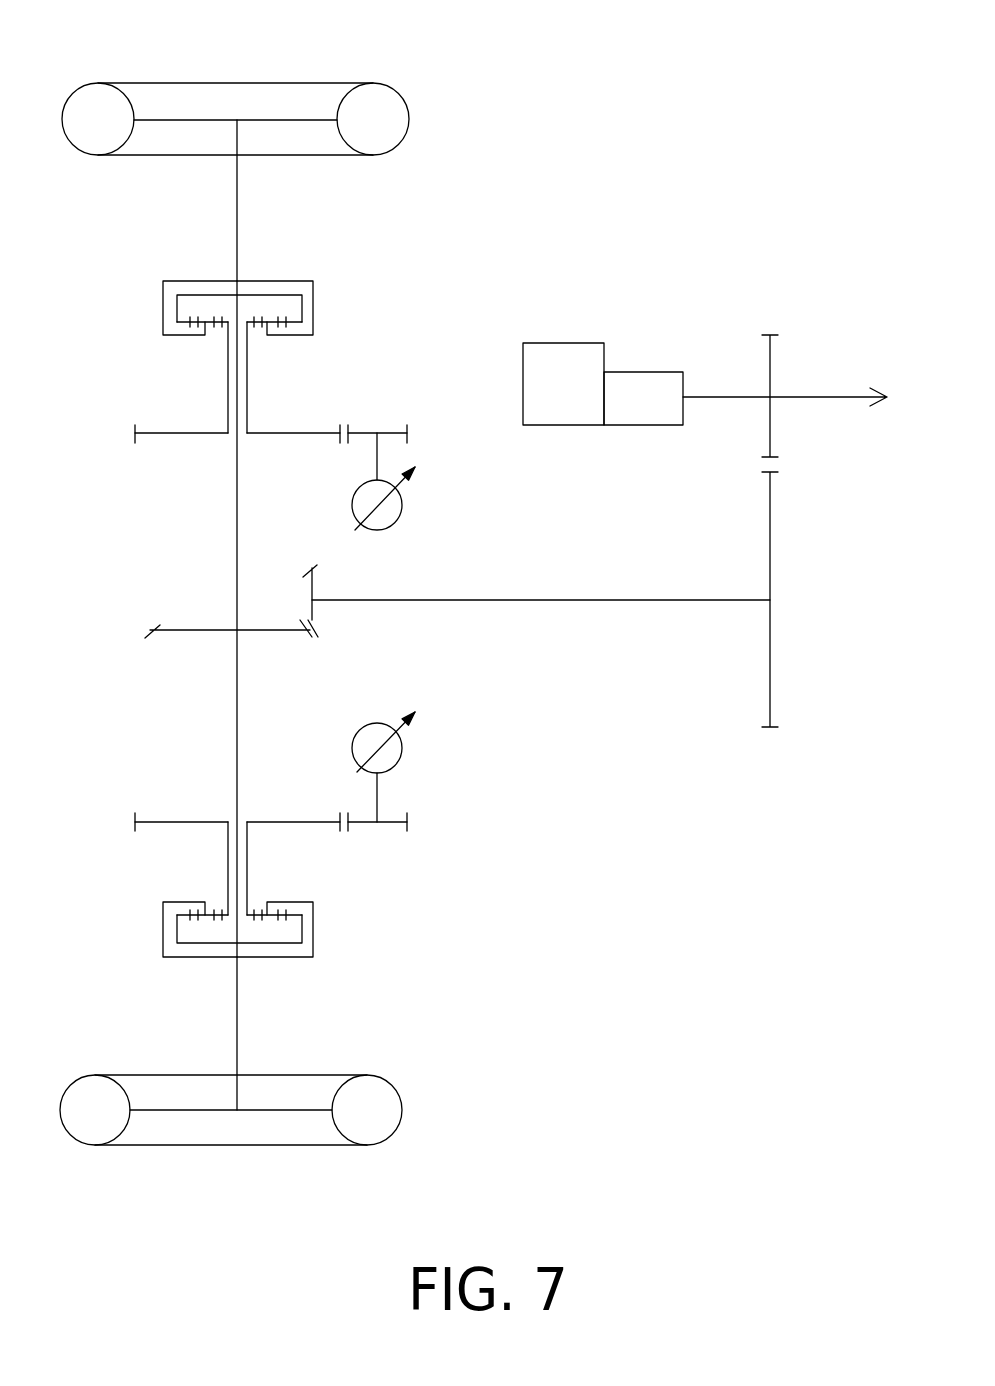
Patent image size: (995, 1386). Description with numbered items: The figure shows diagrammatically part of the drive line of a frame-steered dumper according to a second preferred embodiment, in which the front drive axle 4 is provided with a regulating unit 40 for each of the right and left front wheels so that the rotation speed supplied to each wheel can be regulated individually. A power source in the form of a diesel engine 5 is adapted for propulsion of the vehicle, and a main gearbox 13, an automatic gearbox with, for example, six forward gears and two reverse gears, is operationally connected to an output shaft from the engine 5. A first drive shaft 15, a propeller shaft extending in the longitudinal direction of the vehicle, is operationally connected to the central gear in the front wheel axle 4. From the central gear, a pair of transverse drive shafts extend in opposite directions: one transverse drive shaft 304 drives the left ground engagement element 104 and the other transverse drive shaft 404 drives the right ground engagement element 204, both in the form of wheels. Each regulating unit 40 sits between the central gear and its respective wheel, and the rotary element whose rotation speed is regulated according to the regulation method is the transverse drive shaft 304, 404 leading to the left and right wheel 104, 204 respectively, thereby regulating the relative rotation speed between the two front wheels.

The front wheel axle 4 is at (237, 1182).
The diesel engine 5 is at (555, 312).
The main gearbox 13 is at (658, 332).
The first drive shaft 15 is at (595, 597).
The regulating unit 40 is at (353, 342).
The left ground engagement element 104 is at (402, 1110).
The right ground engagement element 204 is at (410, 113).
The transverse drive shaft 304 is at (237, 1025).
The transverse drive shaft 404 is at (237, 213).